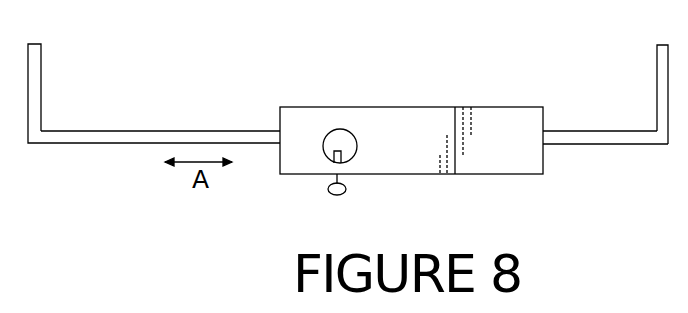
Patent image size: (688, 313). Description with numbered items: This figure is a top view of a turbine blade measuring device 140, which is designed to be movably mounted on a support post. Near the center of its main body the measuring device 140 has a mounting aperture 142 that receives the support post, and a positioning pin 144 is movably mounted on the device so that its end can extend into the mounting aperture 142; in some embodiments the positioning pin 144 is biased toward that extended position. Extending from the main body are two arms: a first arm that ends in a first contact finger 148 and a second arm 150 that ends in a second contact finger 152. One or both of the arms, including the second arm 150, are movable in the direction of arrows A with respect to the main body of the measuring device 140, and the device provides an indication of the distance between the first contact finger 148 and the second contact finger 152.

The measuring device 140 is at (400, 107).
The mounting aperture 142 is at (343, 129).
The positioning pin 144 is at (63, 144).
The first contact finger 148 is at (42, 72).
The second arm 150 is at (623, 144).
The second contact finger 152 is at (657, 57).